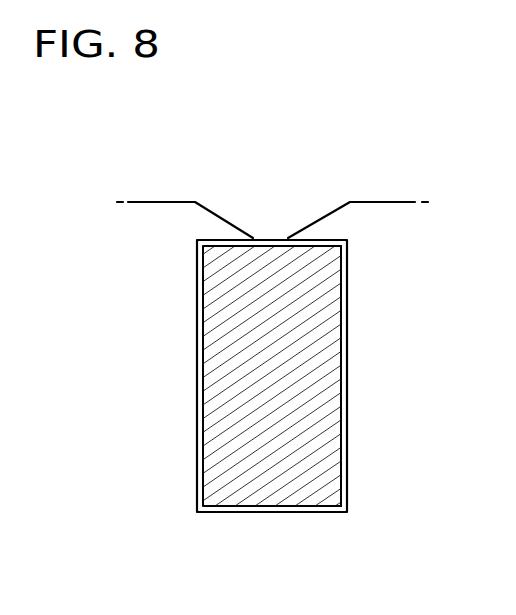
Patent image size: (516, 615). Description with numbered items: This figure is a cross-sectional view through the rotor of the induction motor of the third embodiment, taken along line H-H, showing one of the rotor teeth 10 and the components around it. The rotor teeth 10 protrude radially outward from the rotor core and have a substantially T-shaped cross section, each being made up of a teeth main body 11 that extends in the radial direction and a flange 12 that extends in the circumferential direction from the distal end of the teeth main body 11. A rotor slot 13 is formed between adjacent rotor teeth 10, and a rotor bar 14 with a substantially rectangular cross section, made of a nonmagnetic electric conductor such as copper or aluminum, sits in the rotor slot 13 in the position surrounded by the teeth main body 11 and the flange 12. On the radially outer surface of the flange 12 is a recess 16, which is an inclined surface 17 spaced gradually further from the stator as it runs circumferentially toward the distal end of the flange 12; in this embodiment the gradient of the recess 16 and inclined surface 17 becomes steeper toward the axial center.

The rotor teeth 10 is at (313, 140).
The teeth main body 11 is at (337, 305).
The flange 12 is at (303, 238).
The rotor slot 13 is at (347, 433).
The rotor bar 14 is at (215, 440).
The recess 16 is at (317, 218).
The inclined surface 17 is at (373, 186).